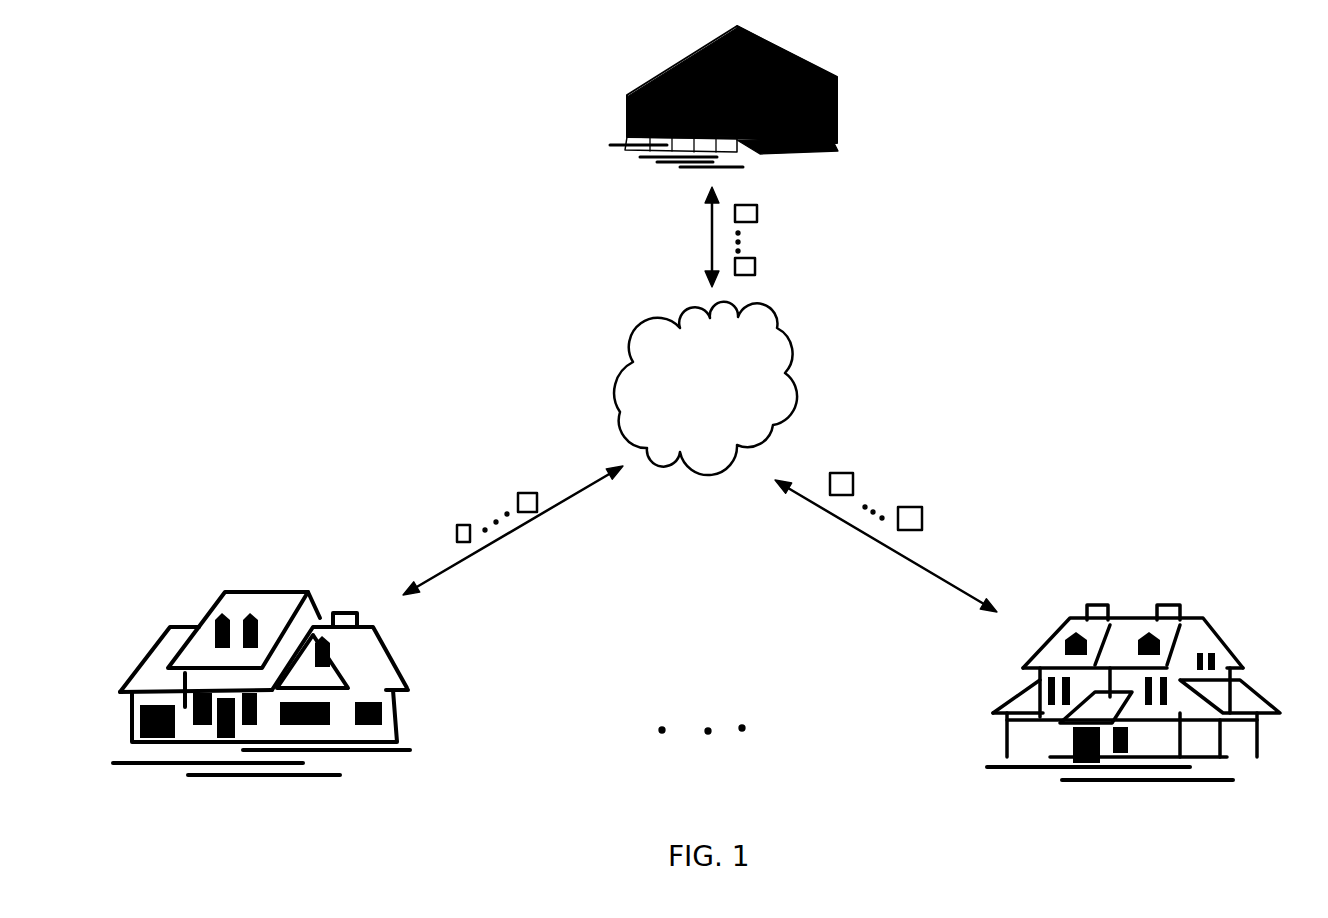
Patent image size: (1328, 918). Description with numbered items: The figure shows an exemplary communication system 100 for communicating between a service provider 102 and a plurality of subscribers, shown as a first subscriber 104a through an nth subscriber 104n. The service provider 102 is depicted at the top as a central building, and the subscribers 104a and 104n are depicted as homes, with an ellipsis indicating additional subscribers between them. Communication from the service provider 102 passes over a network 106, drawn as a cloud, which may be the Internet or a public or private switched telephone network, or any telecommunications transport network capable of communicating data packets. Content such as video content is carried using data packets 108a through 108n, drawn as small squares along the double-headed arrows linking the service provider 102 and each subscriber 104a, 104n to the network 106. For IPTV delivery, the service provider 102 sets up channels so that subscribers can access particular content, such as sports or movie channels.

The communication system 100 is at (1164, 119).
The service provider 102 is at (800, 57).
The subscriber 104a is at (257, 592).
The subscriber 104n is at (1173, 603).
The network 106 is at (785, 332).
The data packet 108a is at (757, 265).
The data packet 108n is at (757, 212).